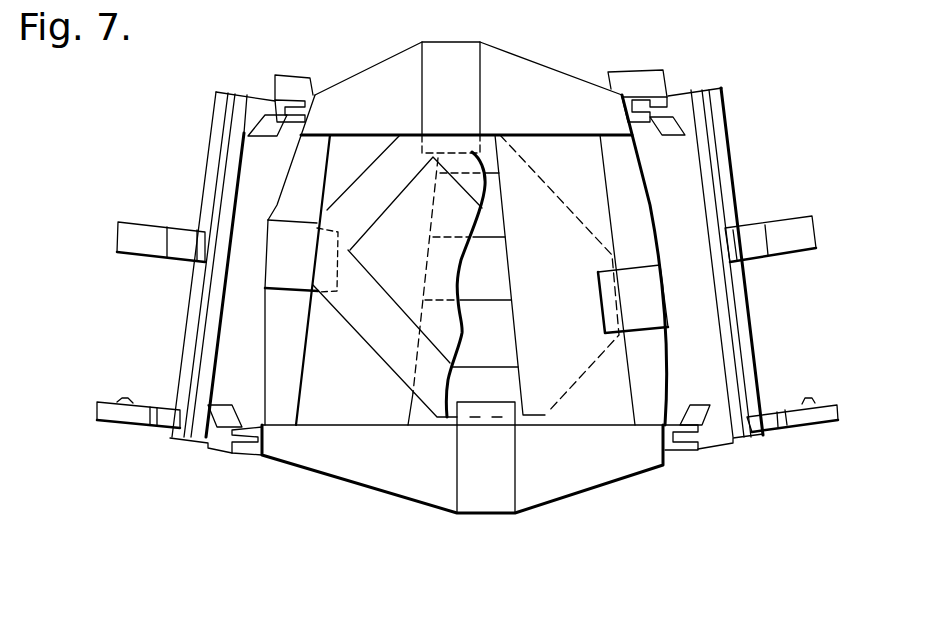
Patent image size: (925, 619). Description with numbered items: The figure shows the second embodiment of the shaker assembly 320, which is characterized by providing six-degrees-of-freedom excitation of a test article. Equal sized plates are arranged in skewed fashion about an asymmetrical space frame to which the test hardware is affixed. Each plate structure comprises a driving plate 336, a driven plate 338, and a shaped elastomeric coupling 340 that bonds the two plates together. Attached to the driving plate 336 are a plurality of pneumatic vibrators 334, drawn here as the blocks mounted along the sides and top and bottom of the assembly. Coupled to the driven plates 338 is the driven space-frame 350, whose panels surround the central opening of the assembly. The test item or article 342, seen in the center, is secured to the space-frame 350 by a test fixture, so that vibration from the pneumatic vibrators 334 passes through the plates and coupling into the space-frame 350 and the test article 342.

The shaker assembly 320 is at (727, 67).
The pneumatic vibrators 334 is at (320, 77).
The driving plate 336 is at (213, 143).
The driven plate 338 is at (242, 103).
The shaped elastomeric coupling 340 is at (227, 117).
The test item or article 342 is at (393, 283).
The driven space-frame 350 is at (545, 78).